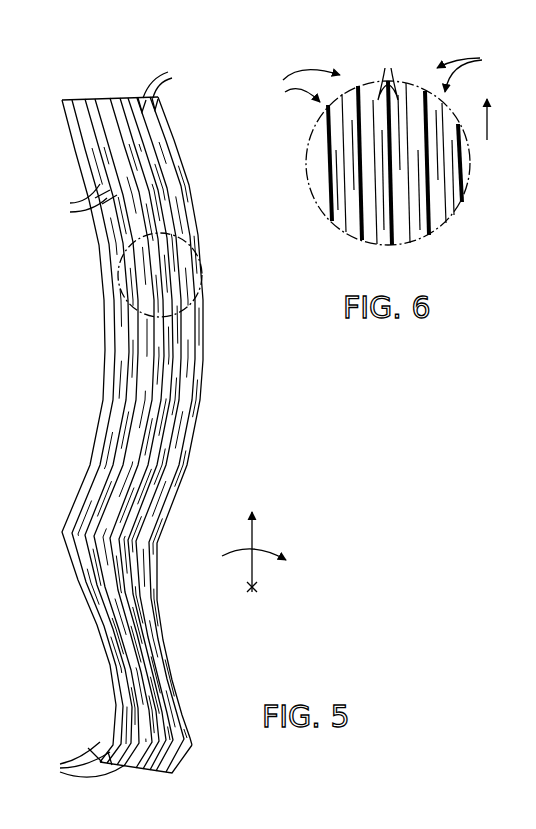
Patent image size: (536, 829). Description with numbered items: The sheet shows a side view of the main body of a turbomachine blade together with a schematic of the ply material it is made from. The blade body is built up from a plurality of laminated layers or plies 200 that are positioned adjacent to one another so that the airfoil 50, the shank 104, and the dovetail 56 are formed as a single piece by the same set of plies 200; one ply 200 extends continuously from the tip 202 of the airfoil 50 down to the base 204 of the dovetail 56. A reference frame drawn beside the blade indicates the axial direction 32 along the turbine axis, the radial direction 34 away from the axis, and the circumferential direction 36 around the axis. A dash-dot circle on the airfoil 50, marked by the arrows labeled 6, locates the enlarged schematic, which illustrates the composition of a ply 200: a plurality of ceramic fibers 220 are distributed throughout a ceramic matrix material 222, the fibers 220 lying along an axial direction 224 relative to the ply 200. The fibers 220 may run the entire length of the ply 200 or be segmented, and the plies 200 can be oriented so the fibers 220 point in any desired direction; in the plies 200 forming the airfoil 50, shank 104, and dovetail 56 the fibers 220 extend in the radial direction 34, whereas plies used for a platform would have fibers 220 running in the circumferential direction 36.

In FIG. 5, the airfoil 50 is at (92, 312).
In FIG. 5, the tip 202 is at (90, 78).
In FIG. 5, the base 204 is at (188, 750).
In FIG. 5, the plies 200 is at (115, 422).
In FIG. 6, the plies 200 is at (390, 82).
In FIG. 5, the fibers 220 is at (120, 403).
In FIG. 6, the fibers 220 is at (384, 86).
In FIG. 6, the matrix material 222 is at (377, 240).
In FIG. 6, the axial direction 224 is at (487, 127).
In FIG. 5, the FIG. 6 section indicator 6 is at (192, 235).
In FIG. 5, the axial direction 32 is at (255, 594).
In FIG. 5, the radial direction 34 is at (255, 532).
In FIG. 5, the circumferential direction 36 is at (232, 550).
In FIG. 5, the shank 104 is at (92, 655).
In FIG. 5, the dovetail 56 is at (200, 718).